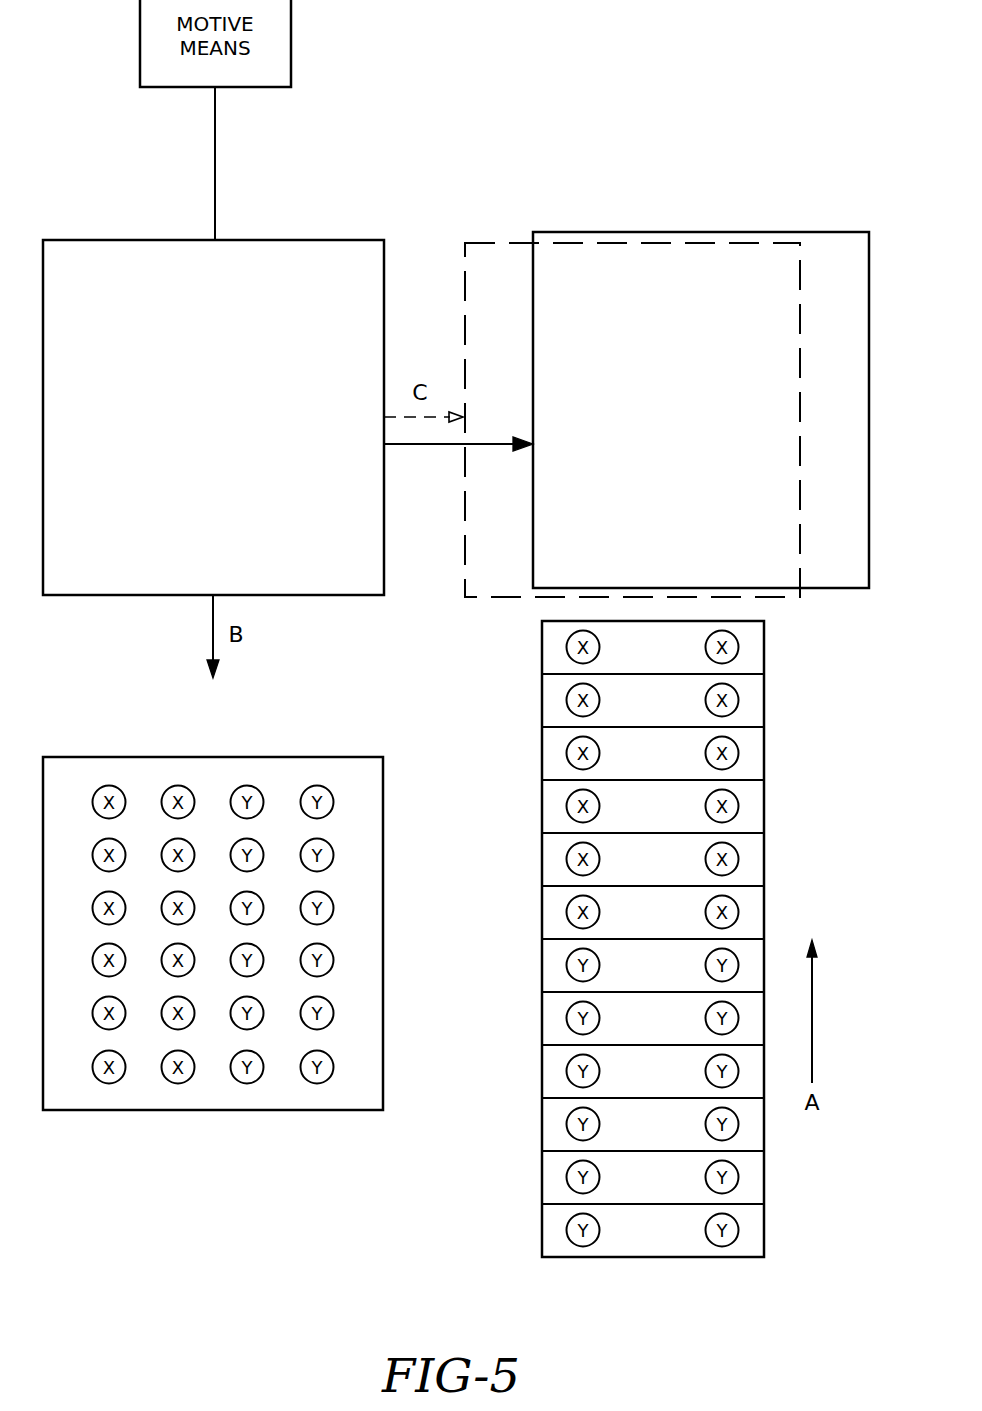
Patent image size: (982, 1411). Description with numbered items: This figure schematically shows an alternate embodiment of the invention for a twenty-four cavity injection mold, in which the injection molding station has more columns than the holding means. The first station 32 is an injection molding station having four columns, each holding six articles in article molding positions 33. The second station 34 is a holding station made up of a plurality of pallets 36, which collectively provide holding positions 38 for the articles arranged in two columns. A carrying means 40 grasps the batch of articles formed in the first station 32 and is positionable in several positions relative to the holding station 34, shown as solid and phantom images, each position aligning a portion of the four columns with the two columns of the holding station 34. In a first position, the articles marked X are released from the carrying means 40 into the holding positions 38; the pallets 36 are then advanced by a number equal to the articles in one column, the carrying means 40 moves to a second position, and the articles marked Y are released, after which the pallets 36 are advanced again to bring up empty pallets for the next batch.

The carrying means 40 is at (364, 218).
The first station 32 is at (332, 743).
The article molding positions 33 is at (235, 1025).
The second station 34 is at (524, 1203).
The pallets 36 is at (552, 760).
The holding positions 38 is at (592, 849).